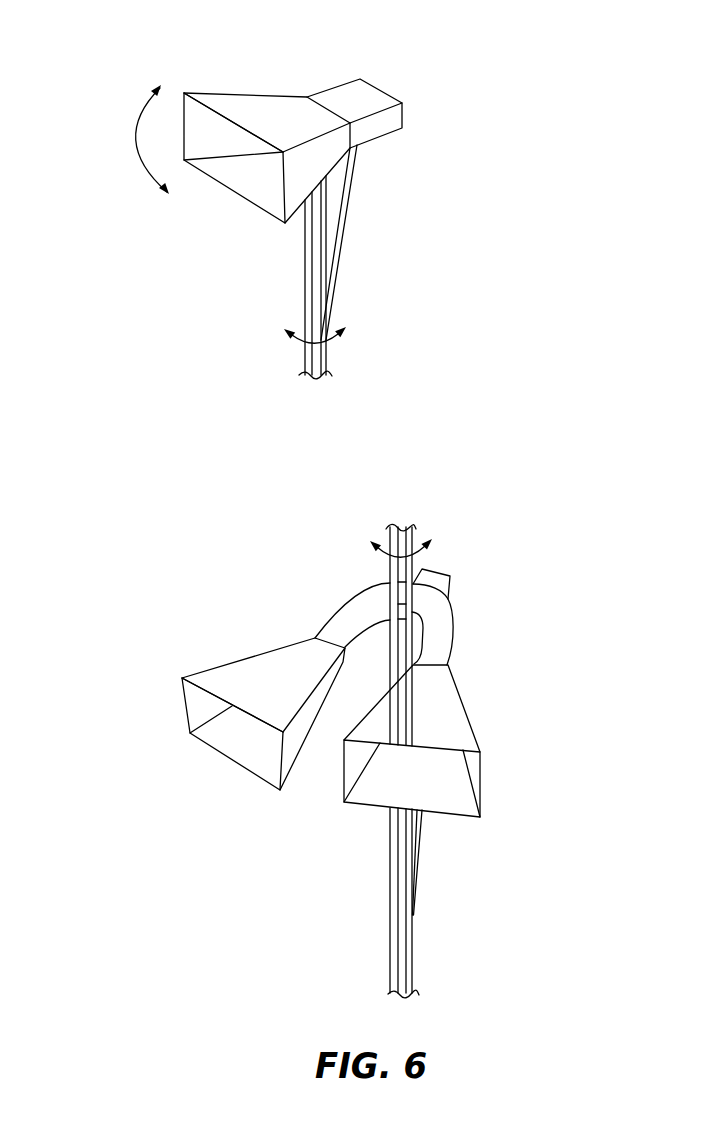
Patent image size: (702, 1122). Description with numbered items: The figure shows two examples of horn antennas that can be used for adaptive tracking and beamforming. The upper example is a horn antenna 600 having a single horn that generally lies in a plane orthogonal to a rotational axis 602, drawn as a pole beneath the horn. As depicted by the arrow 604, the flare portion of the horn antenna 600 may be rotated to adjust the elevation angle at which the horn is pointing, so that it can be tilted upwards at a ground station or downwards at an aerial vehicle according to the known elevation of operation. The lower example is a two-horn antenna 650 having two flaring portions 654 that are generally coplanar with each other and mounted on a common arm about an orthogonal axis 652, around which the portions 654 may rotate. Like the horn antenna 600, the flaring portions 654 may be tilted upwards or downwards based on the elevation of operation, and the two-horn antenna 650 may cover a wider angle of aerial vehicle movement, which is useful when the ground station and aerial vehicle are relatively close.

The horn antenna 600 is at (472, 66).
The rotational axis 602 is at (327, 375).
The arrow 604 is at (132, 137).
The two-horn antenna 650 is at (508, 536).
The orthogonal axis 652 is at (410, 918).
The flaring portions 654 is at (257, 780).